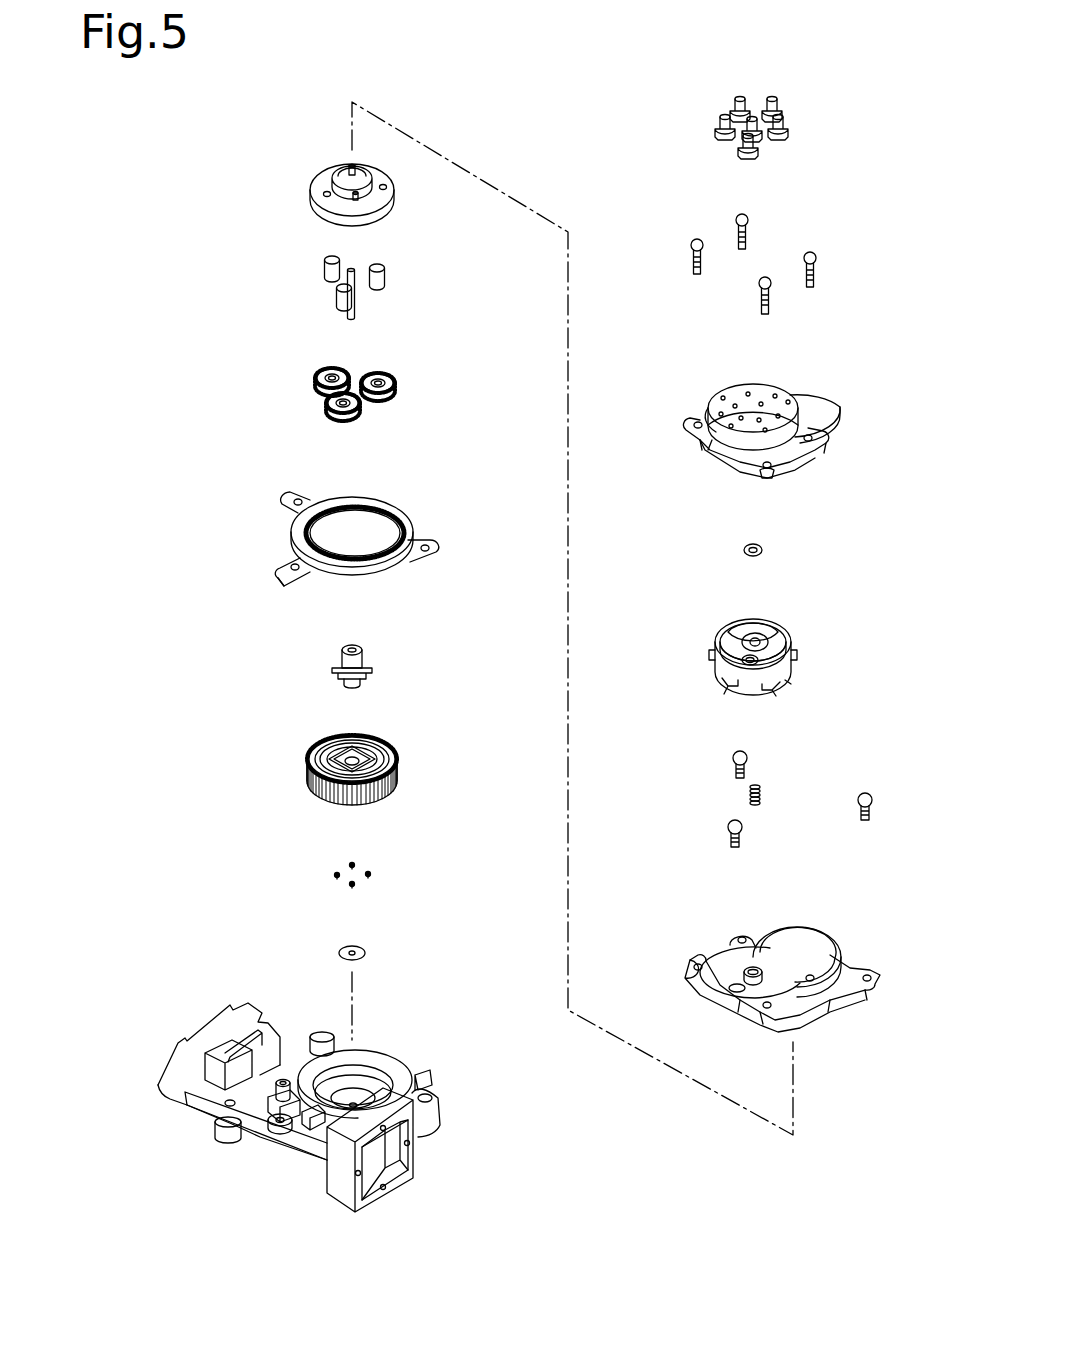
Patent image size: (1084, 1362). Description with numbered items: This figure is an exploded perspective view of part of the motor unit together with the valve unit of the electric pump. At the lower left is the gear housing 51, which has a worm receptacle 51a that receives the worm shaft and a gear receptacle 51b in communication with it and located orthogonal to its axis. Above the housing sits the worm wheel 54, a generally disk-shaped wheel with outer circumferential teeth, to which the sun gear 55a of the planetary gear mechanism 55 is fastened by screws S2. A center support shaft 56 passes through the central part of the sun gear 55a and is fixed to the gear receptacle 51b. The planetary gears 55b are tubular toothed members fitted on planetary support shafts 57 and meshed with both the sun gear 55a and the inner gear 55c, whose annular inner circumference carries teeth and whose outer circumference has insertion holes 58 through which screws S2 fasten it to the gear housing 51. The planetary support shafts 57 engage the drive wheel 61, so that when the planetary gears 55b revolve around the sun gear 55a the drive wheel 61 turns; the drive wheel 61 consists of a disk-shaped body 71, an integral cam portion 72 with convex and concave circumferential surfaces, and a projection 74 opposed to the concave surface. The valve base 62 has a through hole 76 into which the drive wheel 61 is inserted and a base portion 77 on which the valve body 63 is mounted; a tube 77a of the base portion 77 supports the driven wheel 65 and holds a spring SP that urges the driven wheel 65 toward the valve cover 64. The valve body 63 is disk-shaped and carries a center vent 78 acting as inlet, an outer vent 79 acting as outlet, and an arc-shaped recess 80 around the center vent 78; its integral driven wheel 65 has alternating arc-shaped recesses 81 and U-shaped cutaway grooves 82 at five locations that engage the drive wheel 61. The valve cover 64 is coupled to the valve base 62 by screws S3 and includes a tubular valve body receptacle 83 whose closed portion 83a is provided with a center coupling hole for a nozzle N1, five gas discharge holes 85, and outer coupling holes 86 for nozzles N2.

The gear housing 51 is at (301, 1078).
The worm receptacle 51a is at (257, 1132).
The gear receptacle 51b is at (388, 1052).
The worm wheel 54 is at (400, 768).
The planetary gear mechanism 55 is at (363, 548).
The sun gear 55a is at (364, 652).
The planetary gears 55b is at (313, 372).
The inner gear 55c is at (368, 516).
The center support shaft 56 is at (355, 306).
The planetary support shafts 57 is at (337, 300).
The insertion holes 58 is at (298, 500).
The drive wheel 61 is at (347, 197).
The valve base 62 is at (782, 961).
The valve body 63 is at (761, 661).
The valve cover 64 is at (749, 429).
The driven wheel 65 is at (798, 658).
The body 71 is at (323, 200).
The cam portion 72 is at (368, 158).
The projection 74 is at (359, 197).
The through hole 76 is at (815, 940).
The base portion 77 is at (748, 933).
The tube 77a is at (756, 967).
The center vent 78 is at (757, 634).
The outer vent 79 is at (748, 655).
The recess 80 is at (770, 638).
The arc-shaped recesses 81 is at (745, 688).
The U-shaped cutaway grooves 82 is at (770, 692).
The valve body receptacle 83 is at (765, 437).
The closed portion 83a is at (716, 440).
The gas discharge holes 85 is at (761, 402).
The outer coupling holes 86 is at (742, 396).
The nozzle N1 is at (752, 122).
The nozzles N2 is at (733, 116).
The screws S2 is at (370, 877).
The screws S3 is at (691, 244).
The spring SP is at (762, 790).